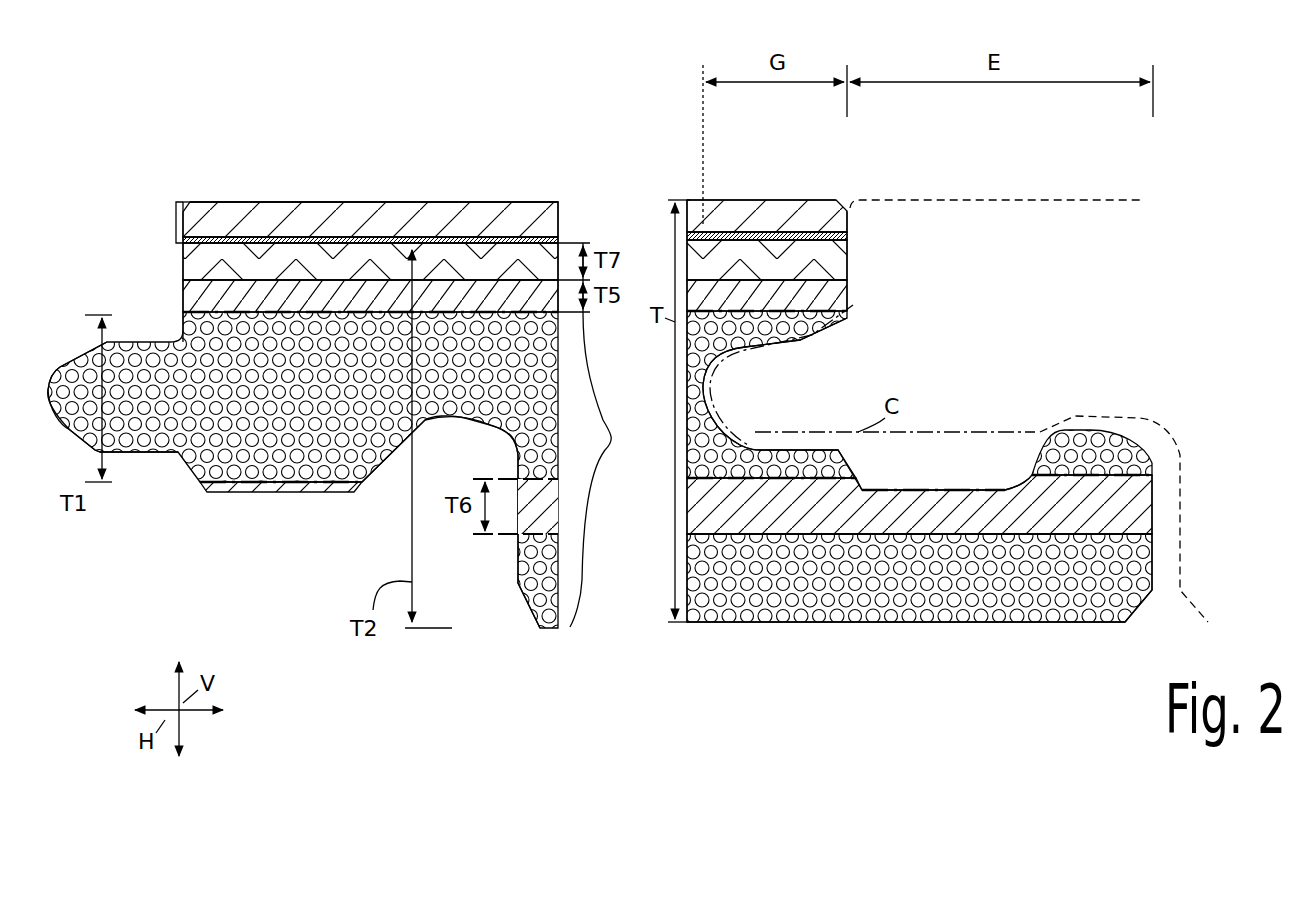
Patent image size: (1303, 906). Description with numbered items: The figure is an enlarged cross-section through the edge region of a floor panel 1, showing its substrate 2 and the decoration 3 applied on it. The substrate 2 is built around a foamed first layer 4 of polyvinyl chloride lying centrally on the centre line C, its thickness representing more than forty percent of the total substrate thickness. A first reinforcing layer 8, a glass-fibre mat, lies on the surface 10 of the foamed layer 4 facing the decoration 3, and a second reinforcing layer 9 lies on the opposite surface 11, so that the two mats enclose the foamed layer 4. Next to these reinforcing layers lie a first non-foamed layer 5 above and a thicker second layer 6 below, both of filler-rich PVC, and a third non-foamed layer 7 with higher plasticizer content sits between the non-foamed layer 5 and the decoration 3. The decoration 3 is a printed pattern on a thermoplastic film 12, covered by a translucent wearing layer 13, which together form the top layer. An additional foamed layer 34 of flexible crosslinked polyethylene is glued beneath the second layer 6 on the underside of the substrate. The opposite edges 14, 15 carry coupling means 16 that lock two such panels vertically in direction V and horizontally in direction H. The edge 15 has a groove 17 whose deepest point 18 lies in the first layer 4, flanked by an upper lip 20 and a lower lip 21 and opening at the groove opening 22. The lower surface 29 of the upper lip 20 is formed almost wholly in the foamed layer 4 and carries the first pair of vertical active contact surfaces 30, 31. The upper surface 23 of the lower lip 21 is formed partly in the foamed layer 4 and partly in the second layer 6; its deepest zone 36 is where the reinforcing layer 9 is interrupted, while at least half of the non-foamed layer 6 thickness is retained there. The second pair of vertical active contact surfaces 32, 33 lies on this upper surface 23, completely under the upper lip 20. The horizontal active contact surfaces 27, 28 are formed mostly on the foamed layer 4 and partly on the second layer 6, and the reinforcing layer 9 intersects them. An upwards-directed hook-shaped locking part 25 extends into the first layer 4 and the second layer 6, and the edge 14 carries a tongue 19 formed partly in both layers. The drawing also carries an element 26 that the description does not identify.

The floor panel 1 is at (275, 193).
The substrate 2 is at (618, 430).
The decoration 3 is at (412, 248).
The first layer 4 is at (262, 484).
The first non-foamed layer 5 is at (185, 300).
The second layer 6 is at (533, 498).
The third non-foamed layer 7 is at (222, 267).
The first reinforcing layer 8 is at (357, 310).
The second reinforcing layer 9 is at (292, 490).
The surface of the foamed layer facing the decoration 10 is at (703, 335).
The opposite surface of the foamed layer 11 is at (948, 598).
The thermoplastic film 12 is at (562, 238).
The wearing layer 13 is at (176, 218).
The edge 14 is at (158, 600).
The edge 15 is at (1149, 321).
The coupling means 16 is at (1000, 655).
The groove 17 is at (700, 398).
The deepest point 18 is at (700, 378).
The tongue 19 is at (140, 458).
The upper lip 20 is at (760, 330).
The lower lip 21 is at (772, 498).
The groove opening 22 is at (848, 378).
The upper surface of the lower lip 23 is at (868, 488).
The hook-shaped locking part 25 is at (1090, 440).
The thin bottom layer 26 is at (398, 486).
The horizontal active contact surface 27 is at (1042, 440).
The horizontal active contact surface 28 is at (442, 466).
The lower surface of the upper lip 29 is at (788, 355).
The vertical active contact surface 30 is at (118, 340).
The vertical active contact surface 31 is at (800, 345).
The vertical active contact surface 32 is at (795, 447).
The vertical active contact surface 33 is at (105, 460).
The additional foamed layer 34 is at (908, 607).
The deepest zone 36 is at (958, 535).